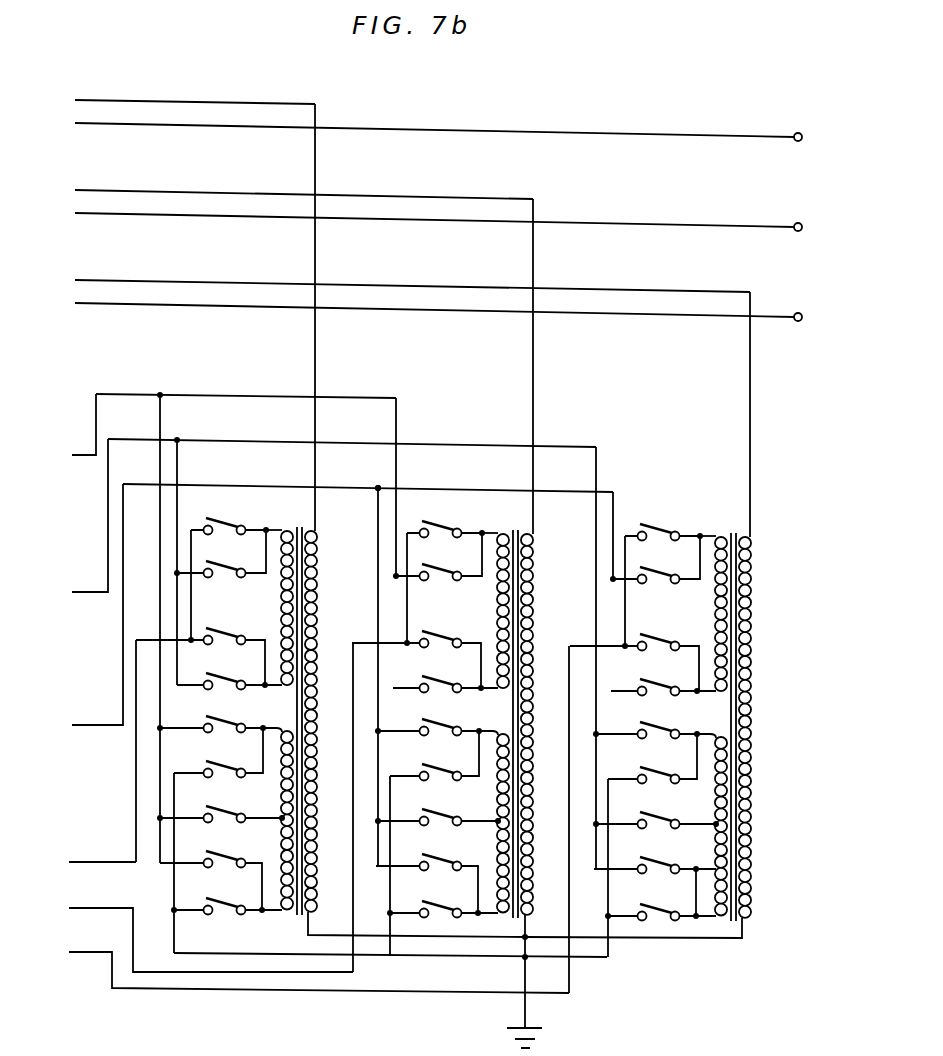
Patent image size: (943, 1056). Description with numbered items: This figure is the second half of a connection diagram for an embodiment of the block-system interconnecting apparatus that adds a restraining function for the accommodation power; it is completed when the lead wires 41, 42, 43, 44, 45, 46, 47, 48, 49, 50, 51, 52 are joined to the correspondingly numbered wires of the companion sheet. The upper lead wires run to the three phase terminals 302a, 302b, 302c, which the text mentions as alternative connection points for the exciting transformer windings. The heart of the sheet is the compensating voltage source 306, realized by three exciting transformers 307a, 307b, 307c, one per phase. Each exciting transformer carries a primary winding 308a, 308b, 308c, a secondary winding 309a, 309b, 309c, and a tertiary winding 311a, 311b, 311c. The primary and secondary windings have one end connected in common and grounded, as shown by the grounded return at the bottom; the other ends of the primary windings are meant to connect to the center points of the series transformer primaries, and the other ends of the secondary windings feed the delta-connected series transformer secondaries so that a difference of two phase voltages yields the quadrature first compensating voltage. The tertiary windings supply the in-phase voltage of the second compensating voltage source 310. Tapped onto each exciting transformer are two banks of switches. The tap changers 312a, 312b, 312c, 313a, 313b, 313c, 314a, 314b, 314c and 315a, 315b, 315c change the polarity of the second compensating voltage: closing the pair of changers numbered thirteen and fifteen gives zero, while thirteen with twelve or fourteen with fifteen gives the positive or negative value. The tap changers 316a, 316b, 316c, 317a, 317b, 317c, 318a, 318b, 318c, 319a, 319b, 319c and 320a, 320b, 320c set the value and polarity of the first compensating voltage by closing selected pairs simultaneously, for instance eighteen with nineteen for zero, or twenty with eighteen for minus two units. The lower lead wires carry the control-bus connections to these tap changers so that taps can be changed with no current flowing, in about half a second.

The lead wire 41 is at (250, 102).
The lead wire 42 is at (205, 126).
The lead wire 43 is at (284, 192).
The lead wire 44 is at (235, 216).
The lead wire 45 is at (219, 281).
The lead wire 46 is at (228, 308).
The lead wire 47 is at (89, 456).
The lead wire 48 is at (88, 594).
The lead wire 49 is at (105, 724).
The lead wire 50 is at (113, 861).
The lead wire 51 is at (107, 907).
The lead wire 52 is at (108, 951).
The terminal 302a is at (794, 132).
The terminal 302b is at (795, 223).
The terminal 302c is at (796, 313).
The compensating voltage source 306 is at (807, 520).
The exciting transformer 307a is at (313, 487).
The exciting transformer 307b is at (531, 490).
The exciting transformer 307c is at (741, 537).
The primary winding 308a is at (316, 558).
The primary winding 308b is at (543, 720).
The primary winding 308c is at (763, 723).
The secondary winding 309a is at (277, 900).
The secondary winding 309b is at (503, 908).
The secondary winding 309c is at (718, 915).
The second compensating voltage source 310 is at (480, 431).
The tertiary winding 311a is at (296, 529).
The tertiary winding 311b is at (501, 515).
The tertiary winding 311c is at (717, 518).
The tap changer 312a is at (237, 525).
The tap changer 312b is at (445, 517).
The tap changer 312c is at (662, 520).
The tap changer 313a is at (237, 671).
The tap changer 313b is at (445, 671).
The tap changer 313c is at (663, 673).
The tap changer 314a is at (240, 567).
The tap changer 314b is at (437, 557).
The tap changer 314c is at (655, 560).
The tap changer 315a is at (238, 626).
The tap changer 315b is at (416, 646).
The tap changer 315c is at (634, 648).
The tap changer 316a is at (240, 714).
The tap changer 316b is at (436, 714).
The tap changer 316c is at (654, 718).
The tap changer 317a is at (236, 804).
The tap changer 317b is at (438, 804).
The tap changer 317c is at (656, 807).
The tap changer 318a is at (236, 849).
The tap changer 318b is at (427, 870).
The tap changer 318c is at (655, 872).
The tap changer 319a is at (236, 896).
The tap changer 319b is at (442, 896).
The tap changer 319c is at (660, 897).
The tap changer 320a is at (238, 760).
The tap changer 320b is at (434, 756).
The tap changer 320c is at (652, 759).